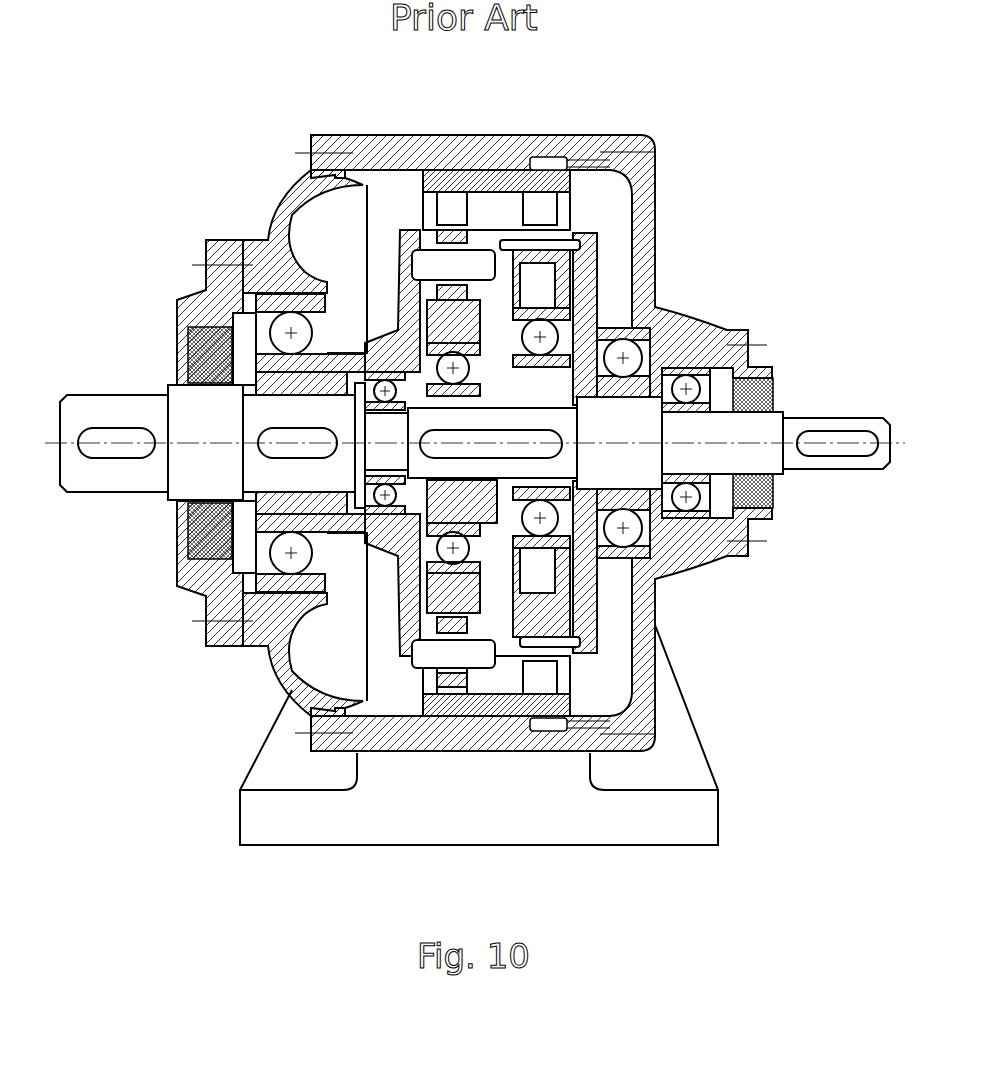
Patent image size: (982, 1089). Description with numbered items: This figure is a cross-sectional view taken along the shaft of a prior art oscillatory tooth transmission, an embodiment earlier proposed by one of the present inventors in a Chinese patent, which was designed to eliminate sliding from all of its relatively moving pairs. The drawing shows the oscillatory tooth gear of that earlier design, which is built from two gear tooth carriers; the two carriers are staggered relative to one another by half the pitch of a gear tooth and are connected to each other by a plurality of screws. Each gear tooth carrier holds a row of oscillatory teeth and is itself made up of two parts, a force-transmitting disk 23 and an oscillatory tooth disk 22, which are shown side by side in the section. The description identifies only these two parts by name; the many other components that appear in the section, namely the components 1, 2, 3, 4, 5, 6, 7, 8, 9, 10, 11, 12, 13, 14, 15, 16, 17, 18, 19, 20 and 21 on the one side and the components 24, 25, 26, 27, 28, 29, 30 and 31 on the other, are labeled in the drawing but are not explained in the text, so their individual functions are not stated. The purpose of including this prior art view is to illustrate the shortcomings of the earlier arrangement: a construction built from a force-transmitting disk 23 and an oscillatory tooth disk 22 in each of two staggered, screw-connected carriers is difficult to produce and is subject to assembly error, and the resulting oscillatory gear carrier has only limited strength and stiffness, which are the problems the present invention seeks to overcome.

The output shaft 1 is at (793, 457).
The shaft seal 2 is at (773, 517).
The end cover 3 is at (712, 562).
The housing flange 4 is at (690, 603).
The output bearing 5 is at (650, 638).
The housing wall 6 is at (600, 640).
The carrier plate 7 is at (612, 600).
The crank bearing 8 is at (600, 557).
The ring gear 9 is at (572, 650).
The fastening screw 10 is at (530, 727).
The housing bottom plate 11 is at (470, 708).
The cycloid disc 12 is at (430, 680).
The eccentric 13 is at (340, 672).
The input cover 14 is at (280, 692).
The bearing housing 15 is at (250, 630).
The input bearing 16 is at (200, 580).
The input seal 17 is at (190, 545).
The input shaft 18 is at (290, 450).
The shaft collar 19 is at (243, 420).
The input bearing 20 is at (370, 338).
The bearing cap 21 is at (425, 300).
The oscillatory tooth disk 22 is at (500, 270).
The force-transmitting disk 23 is at (475, 228).
The housing cover 24 is at (310, 155).
The fastening screw 25 is at (540, 150).
The pin 26 is at (575, 200).
The housing 27 is at (600, 207).
The housing wall 28 is at (640, 247).
The output bearing 29 is at (657, 328).
The bearing cap 30 is at (748, 335).
The output seal 31 is at (775, 385).